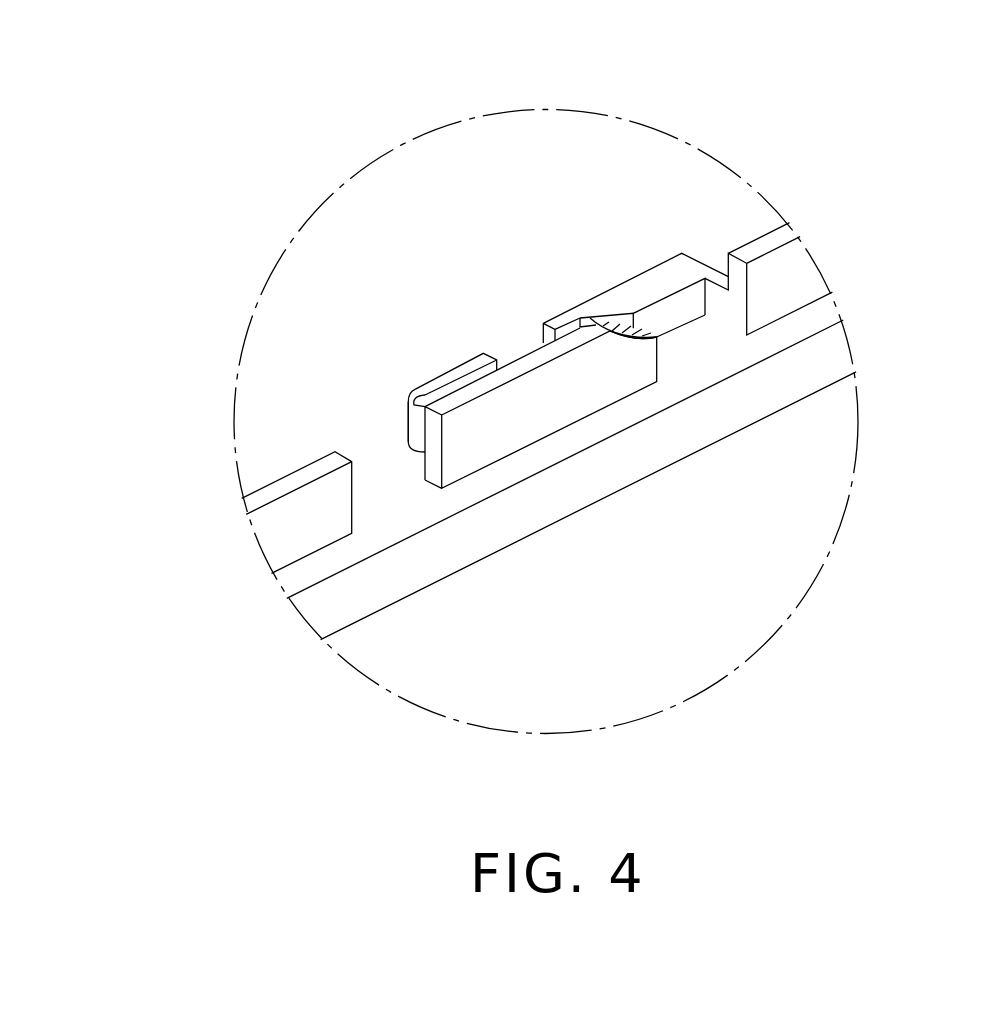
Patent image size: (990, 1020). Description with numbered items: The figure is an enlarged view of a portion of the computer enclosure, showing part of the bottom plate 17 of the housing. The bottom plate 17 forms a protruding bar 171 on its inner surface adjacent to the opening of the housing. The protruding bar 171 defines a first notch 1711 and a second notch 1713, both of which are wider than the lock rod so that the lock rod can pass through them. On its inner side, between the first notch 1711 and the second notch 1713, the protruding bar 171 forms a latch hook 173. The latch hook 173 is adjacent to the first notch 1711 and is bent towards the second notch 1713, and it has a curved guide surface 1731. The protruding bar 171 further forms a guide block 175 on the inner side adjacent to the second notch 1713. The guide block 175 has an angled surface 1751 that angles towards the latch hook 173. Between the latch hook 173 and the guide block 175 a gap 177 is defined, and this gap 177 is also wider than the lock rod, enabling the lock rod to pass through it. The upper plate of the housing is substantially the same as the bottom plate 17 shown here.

The bottom plate 17 is at (368, 583).
The protruding bar 171 is at (577, 393).
The first notch 1711 is at (390, 487).
The second notch 1713 is at (707, 347).
The latch hook 173 is at (450, 377).
The curved guide surface 1731 is at (405, 390).
The guide block 175 is at (648, 290).
The angled surface 1751 is at (613, 317).
The gap 177 is at (512, 348).